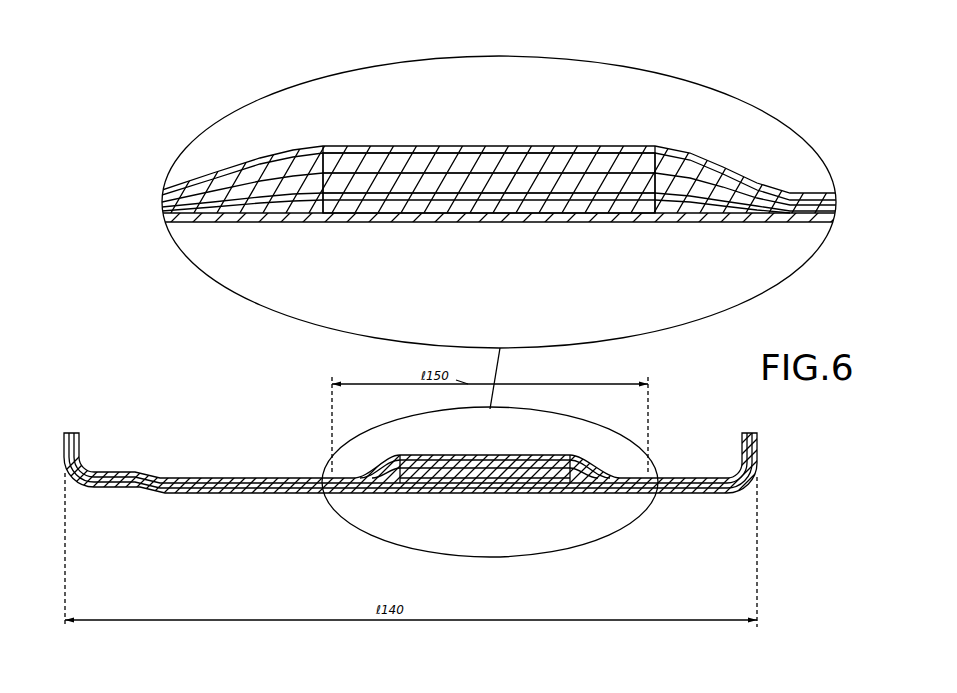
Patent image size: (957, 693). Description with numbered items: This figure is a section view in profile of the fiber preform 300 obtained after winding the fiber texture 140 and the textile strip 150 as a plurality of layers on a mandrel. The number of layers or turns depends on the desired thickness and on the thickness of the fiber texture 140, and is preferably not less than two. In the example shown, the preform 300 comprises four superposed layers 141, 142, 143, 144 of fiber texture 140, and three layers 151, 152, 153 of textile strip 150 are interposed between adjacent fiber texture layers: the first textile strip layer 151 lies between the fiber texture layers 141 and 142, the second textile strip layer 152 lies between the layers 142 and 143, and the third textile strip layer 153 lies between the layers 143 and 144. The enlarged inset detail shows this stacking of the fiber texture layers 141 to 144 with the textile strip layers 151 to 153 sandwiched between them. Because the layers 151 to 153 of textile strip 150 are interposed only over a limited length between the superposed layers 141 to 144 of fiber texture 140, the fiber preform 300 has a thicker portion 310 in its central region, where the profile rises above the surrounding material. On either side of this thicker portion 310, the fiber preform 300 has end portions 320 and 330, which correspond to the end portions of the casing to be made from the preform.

The fiber texture 140 is at (489, 140).
The first layer of fiber texture 141 is at (172, 219).
The second layer of fiber texture 142 is at (228, 205).
The third layer of fiber texture 143 is at (232, 208).
The fourth layer of fiber texture 144 is at (261, 167).
The textile strip 150 is at (489, 140).
The first layer of textile strip 151 is at (407, 97).
The second layer of textile strip 152 is at (500, 184).
The third layer of textile strip 153 is at (431, 158).
The fiber preform 300 is at (435, 299).
The thicker portion 310 is at (408, 450).
The end portion 320 is at (172, 478).
The end portion 330 is at (693, 478).